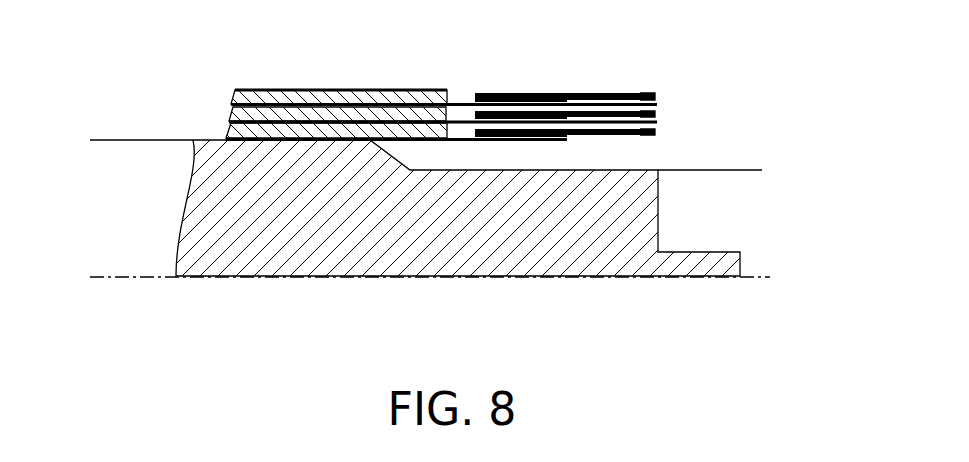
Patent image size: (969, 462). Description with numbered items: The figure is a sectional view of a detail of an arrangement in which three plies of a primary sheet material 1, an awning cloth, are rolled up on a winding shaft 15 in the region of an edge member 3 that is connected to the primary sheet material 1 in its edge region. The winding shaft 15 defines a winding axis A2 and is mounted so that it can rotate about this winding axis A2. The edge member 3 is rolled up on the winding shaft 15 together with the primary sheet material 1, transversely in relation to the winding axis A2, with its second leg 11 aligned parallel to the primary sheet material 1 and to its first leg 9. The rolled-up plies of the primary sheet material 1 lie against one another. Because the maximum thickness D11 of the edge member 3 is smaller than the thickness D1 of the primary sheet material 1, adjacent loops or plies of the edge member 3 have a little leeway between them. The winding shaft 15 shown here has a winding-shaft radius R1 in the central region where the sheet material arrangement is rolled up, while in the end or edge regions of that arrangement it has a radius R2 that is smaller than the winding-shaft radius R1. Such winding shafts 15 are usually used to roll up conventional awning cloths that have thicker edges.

The primary sheet material 1 is at (253, 121).
The edge member 3 is at (648, 118).
The first leg 9 is at (455, 133).
The second leg 11 is at (593, 130).
The winding shaft 15 is at (658, 198).
The thickness of the primary sheet material D1 is at (326, 160).
The maximum thickness of the edge member D11 is at (500, 158).
The winding-shaft radius R1 is at (109, 140).
The radius in the end regions R2 is at (753, 170).
The winding axis A2 is at (543, 277).